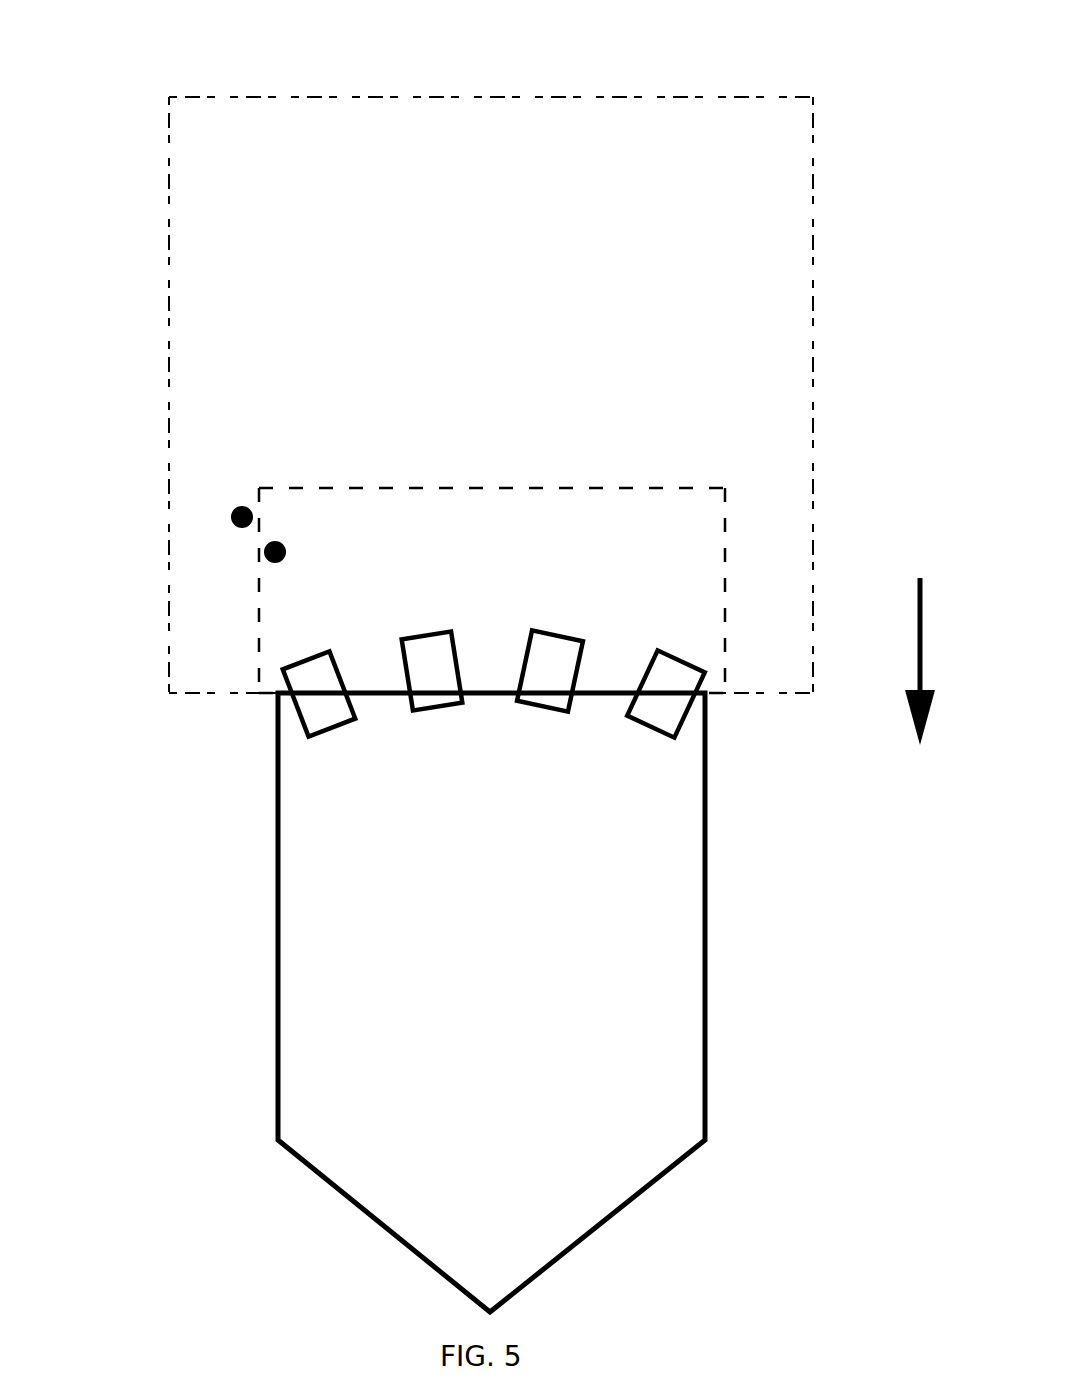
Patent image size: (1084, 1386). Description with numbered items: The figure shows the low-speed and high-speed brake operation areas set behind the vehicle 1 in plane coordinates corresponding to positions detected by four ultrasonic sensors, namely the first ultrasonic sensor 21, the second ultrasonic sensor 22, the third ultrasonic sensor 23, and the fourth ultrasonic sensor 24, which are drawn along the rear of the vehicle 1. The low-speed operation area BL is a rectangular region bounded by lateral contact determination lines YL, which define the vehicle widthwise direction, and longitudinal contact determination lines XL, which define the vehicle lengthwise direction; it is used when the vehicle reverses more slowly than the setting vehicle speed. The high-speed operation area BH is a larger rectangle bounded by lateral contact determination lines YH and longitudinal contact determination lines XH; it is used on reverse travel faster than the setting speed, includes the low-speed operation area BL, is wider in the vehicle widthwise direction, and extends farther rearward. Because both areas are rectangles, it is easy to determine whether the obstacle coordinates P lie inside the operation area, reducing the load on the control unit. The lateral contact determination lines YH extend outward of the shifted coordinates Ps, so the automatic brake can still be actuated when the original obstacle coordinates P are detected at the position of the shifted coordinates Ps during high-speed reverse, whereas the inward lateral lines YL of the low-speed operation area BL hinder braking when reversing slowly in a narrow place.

The vehicle 1 is at (256, 955).
The first ultrasonic sensor 21 is at (319, 693).
The second ultrasonic sensor 22 is at (432, 671).
The third ultrasonic sensor 23 is at (550, 670).
The fourth ultrasonic sensor 24 is at (666, 693).
The longitudinal contact determination lines XH is at (490, 97).
The lateral contact determination lines YH is at (169, 365).
The longitudinal contact determination lines XL is at (477, 488).
The lateral contact determination lines YL is at (258, 665).
The high-speed operation area BH is at (521, 485).
The low-speed operation area BL is at (437, 591).
The shifted coordinates Ps is at (226, 518).
The obstacle coordinates P is at (286, 553).